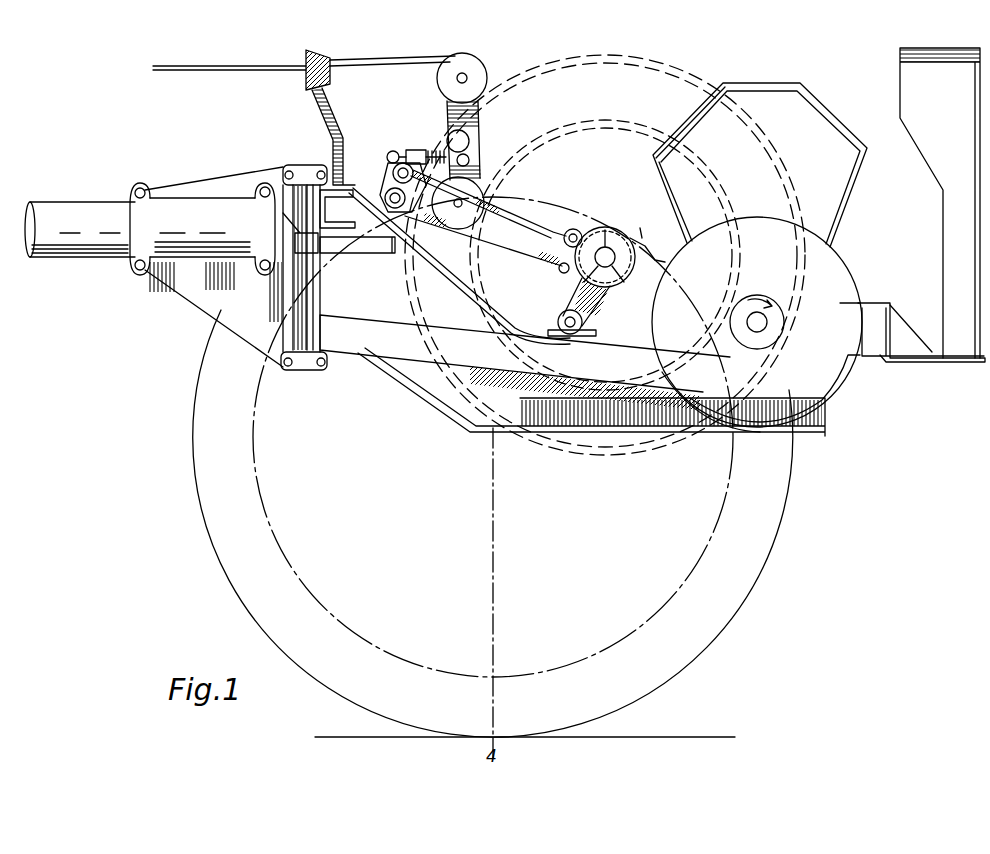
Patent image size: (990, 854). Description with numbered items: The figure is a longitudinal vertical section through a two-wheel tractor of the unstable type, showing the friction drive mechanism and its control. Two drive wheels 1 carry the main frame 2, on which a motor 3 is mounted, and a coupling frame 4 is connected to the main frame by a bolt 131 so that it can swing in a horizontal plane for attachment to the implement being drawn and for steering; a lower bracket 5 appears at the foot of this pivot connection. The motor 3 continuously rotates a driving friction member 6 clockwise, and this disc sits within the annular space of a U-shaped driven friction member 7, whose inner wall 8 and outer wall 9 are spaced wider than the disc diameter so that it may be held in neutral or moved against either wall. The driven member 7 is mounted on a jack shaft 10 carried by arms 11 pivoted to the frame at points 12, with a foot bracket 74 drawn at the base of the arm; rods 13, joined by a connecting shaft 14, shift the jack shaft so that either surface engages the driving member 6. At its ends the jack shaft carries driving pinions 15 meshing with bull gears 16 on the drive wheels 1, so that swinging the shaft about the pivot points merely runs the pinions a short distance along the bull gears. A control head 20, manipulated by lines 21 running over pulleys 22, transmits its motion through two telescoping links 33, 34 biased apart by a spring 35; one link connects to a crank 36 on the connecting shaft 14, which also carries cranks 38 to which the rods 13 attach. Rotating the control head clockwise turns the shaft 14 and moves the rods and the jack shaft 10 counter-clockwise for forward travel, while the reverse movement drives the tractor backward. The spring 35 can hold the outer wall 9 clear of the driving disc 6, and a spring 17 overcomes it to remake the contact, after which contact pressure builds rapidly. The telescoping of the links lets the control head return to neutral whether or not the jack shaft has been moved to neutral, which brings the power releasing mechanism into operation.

The drive wheel 1 is at (782, 525).
The main frame 2 is at (880, 360).
The motor 3 is at (770, 86).
The coupling frame 4 is at (160, 200).
The lower bracket 5 is at (314, 368).
The driving friction member 6 is at (783, 310).
The annular driven friction member 7 is at (630, 57).
The inner wall 8 is at (545, 136).
The outer wall 9 is at (612, 64).
The jack shaft 10 is at (596, 302).
The arm 11 is at (572, 290).
The pivot point 12 is at (560, 316).
The rod 13 is at (524, 206).
The connecting shaft 14 is at (366, 204).
The driving pinion 15 is at (614, 240).
The bull gear 16 is at (645, 240).
The spring 17 is at (520, 246).
The control head 20 is at (383, 120).
The line 21 is at (205, 66).
The pulley 22 is at (484, 62).
The telescoping link 33 is at (452, 132).
The telescoping link 34 is at (392, 150).
The spring 35 is at (422, 149).
The crank 36 is at (392, 168).
The crank 38 is at (386, 192).
The foot bracket 74 is at (585, 321).
The bolt 131 is at (297, 322).